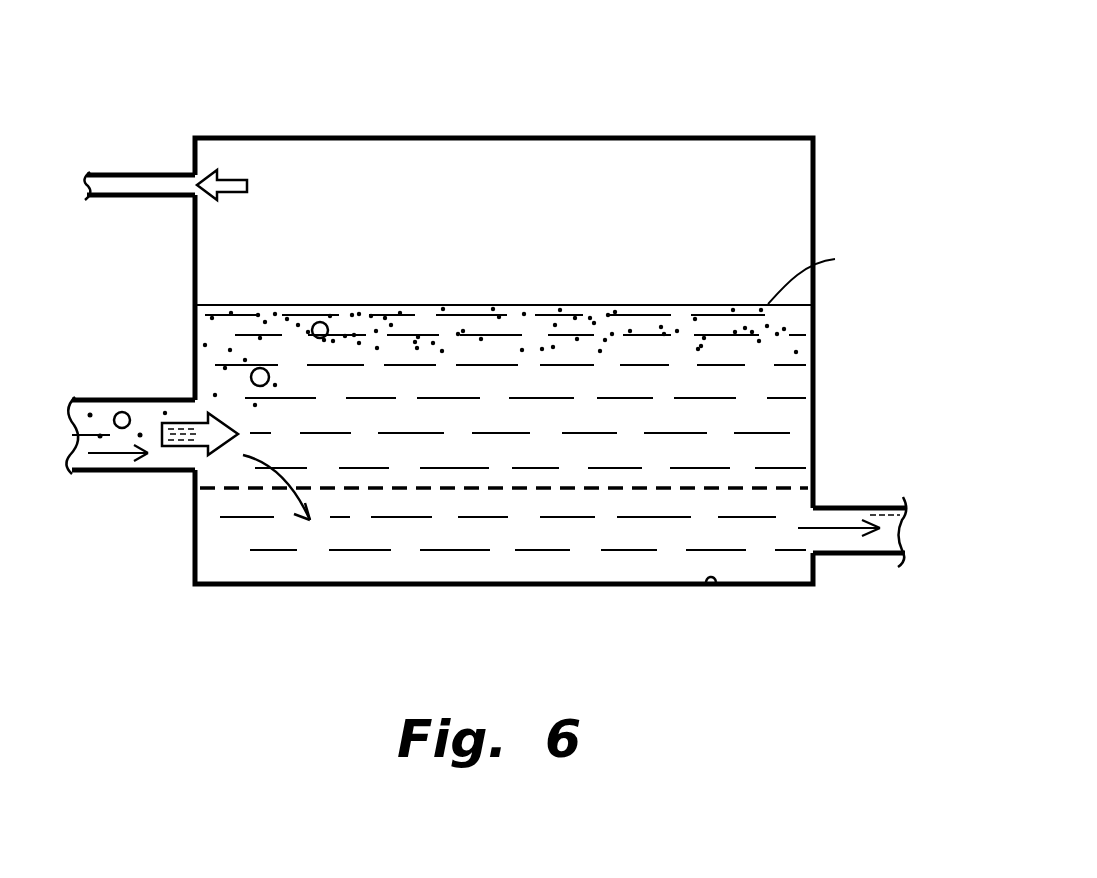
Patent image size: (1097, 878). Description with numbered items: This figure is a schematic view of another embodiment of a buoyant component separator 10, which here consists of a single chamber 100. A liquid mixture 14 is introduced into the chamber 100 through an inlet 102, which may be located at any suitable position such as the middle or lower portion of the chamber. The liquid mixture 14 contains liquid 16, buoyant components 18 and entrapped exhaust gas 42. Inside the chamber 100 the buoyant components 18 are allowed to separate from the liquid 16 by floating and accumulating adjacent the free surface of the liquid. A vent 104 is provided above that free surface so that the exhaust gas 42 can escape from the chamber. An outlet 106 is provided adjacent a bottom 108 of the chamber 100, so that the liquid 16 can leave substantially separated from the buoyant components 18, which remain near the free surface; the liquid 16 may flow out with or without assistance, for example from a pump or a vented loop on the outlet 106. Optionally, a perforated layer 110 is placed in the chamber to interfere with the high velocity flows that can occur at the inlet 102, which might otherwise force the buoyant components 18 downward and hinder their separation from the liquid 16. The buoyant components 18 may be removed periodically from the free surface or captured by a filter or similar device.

The component separator 10 is at (752, 98).
The chamber 100 is at (772, 240).
The buoyant components 18 is at (205, 318).
The exhaust gas 42 is at (236, 178).
The vent 104 is at (147, 173).
The inlet 102 is at (123, 471).
The liquid mixture 14 is at (190, 445).
The liquid 16 is at (282, 496).
The outlet 106 is at (858, 508).
The perforated layer 110 is at (768, 487).
The bottom 108 is at (716, 582).